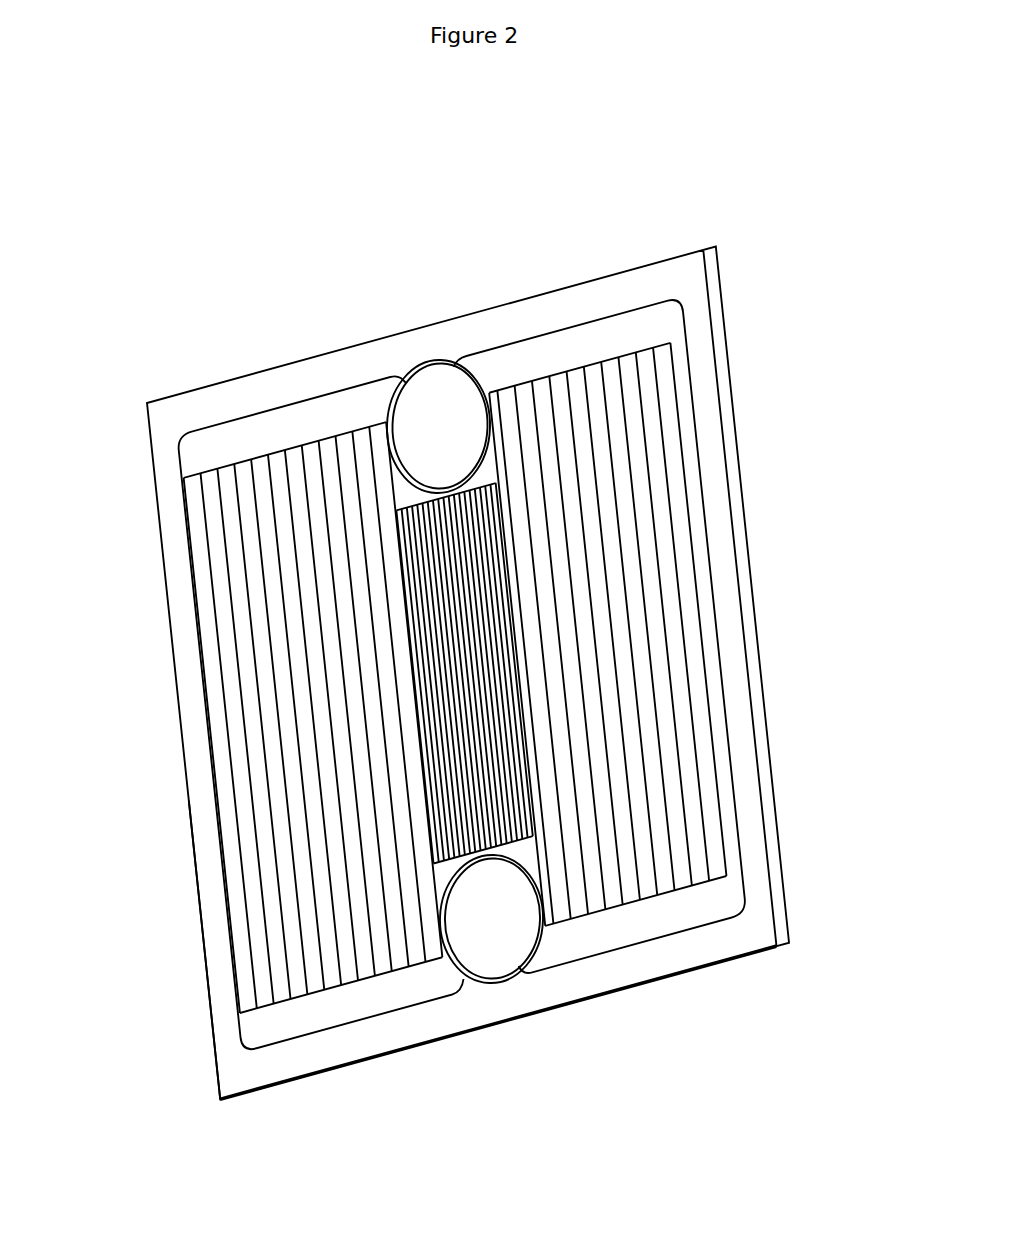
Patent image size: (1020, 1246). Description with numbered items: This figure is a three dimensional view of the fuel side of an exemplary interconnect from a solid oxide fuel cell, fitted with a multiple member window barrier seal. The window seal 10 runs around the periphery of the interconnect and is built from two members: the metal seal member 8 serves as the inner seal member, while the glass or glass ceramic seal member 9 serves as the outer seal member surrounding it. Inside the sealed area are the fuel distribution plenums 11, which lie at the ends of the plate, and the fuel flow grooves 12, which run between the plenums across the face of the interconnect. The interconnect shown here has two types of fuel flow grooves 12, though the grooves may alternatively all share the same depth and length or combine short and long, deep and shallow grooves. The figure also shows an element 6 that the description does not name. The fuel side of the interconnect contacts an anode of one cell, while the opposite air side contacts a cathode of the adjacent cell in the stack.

The port opening 6 is at (450, 415).
The metal seal member 8 is at (176, 494).
The glass or glass ceramic seal member 9 is at (176, 680).
The window seal 10 is at (705, 250).
The fuel distribution plenums 11 is at (268, 432).
The fuel flow grooves 12 is at (648, 573).